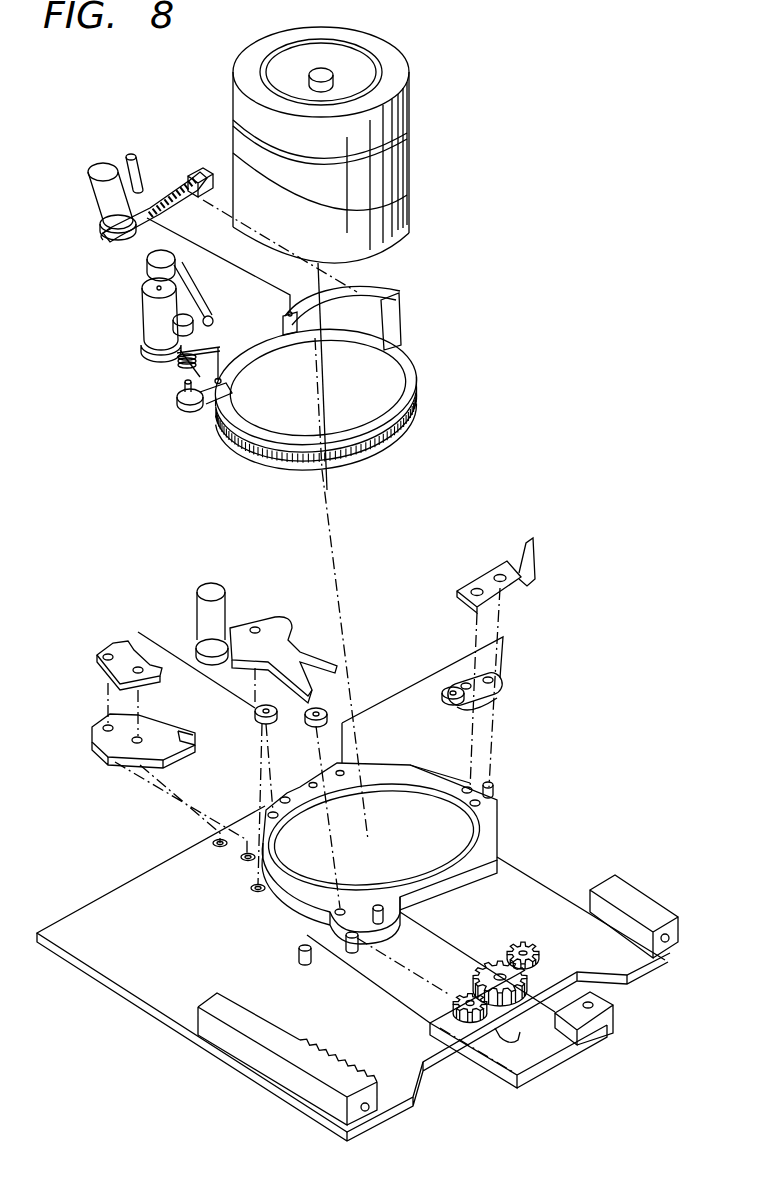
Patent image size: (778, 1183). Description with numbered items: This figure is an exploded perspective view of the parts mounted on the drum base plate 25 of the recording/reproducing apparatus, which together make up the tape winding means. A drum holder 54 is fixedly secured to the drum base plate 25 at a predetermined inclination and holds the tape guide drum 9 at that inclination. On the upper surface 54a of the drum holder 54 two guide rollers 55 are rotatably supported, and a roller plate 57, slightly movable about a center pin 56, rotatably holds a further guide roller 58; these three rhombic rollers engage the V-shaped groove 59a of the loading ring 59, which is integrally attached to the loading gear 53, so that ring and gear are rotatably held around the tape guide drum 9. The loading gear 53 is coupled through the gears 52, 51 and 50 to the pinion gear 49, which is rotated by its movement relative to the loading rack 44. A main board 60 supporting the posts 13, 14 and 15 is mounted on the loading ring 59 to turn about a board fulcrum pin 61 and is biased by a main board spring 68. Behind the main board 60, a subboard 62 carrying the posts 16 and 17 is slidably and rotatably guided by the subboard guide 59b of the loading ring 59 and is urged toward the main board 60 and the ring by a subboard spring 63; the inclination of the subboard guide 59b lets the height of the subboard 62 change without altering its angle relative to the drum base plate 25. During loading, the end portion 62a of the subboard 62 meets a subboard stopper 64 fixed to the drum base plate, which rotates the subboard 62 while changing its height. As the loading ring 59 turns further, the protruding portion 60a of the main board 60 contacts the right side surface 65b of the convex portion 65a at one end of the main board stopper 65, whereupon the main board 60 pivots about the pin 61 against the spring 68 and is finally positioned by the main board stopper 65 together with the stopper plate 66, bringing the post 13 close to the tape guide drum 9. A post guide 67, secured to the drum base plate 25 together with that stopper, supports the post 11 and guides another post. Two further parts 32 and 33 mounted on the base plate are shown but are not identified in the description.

The tape guide drum 9 is at (410, 172).
The post 11 is at (196, 598).
The post 13 is at (142, 305).
The post 14 is at (149, 269).
The post 15 is at (183, 273).
The post 16 is at (96, 200).
The post 17 is at (140, 176).
The drum base plate 25 is at (92, 902).
The rack block 32 is at (268, 1035).
The block 33 is at (640, 893).
The loading rack 44 is at (497, 1082).
The pinion gear 49 is at (467, 993).
The gear 50 is at (515, 1003).
The gear 51 is at (497, 961).
The gear 52 is at (524, 941).
The loading gear 53 is at (402, 445).
The drum holder 54 is at (497, 844).
The upper surface of drum holder 54a is at (497, 808).
The guide rollers 55 is at (316, 726).
The center pin 56 is at (495, 785).
The roller plate 57 is at (497, 700).
The guide roller 58 is at (443, 697).
The loading ring 59 is at (419, 377).
The V-shaped groove 59a is at (418, 418).
The subboard guide 59b is at (397, 290).
The main board 60 is at (149, 337).
The protruding portion of main board 60a is at (205, 320).
The board fulcrum pin 61 is at (195, 413).
The subboard 62 is at (113, 245).
The end portion of subboard 62a is at (105, 240).
The subboard spring 63 is at (203, 170).
The subboard stopper 64 is at (498, 565).
The main board stopper 65 is at (100, 749).
The convex portion 65a is at (187, 730).
The right side surface portion 65b is at (196, 744).
The stopper plate 66 is at (105, 651).
The post guide 67 is at (262, 618).
The main board spring 68 is at (181, 370).